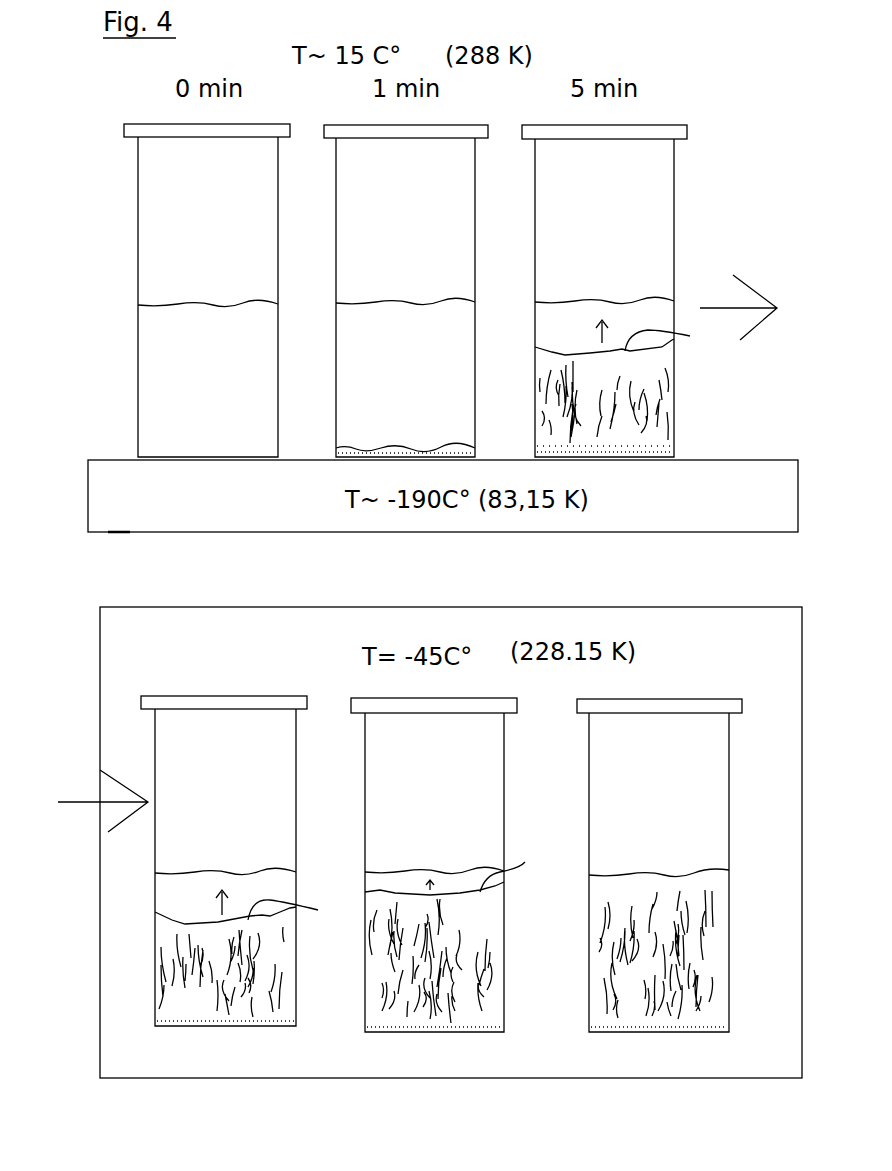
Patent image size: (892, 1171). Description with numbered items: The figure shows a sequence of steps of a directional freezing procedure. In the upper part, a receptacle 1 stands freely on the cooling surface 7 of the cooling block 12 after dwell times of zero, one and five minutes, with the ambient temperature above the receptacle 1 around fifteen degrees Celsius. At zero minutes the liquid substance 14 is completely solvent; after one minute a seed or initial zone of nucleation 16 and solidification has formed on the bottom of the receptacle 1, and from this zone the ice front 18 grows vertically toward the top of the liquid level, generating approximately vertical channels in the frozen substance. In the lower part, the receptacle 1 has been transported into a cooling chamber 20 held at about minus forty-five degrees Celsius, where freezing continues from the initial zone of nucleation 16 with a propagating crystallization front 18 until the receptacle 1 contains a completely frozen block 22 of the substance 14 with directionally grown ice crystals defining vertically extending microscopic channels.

The receptacle 1 is at (278, 205).
The cooling surface 7 is at (115, 460).
The cooling block 12 is at (140, 562).
The liquid substance 14 is at (165, 330).
The initial zone of nucleation 16 is at (408, 447).
The ice front 18 is at (85, 973).
The cooling chamber 20 is at (92, 659).
The completely frozen block 22 is at (691, 938).